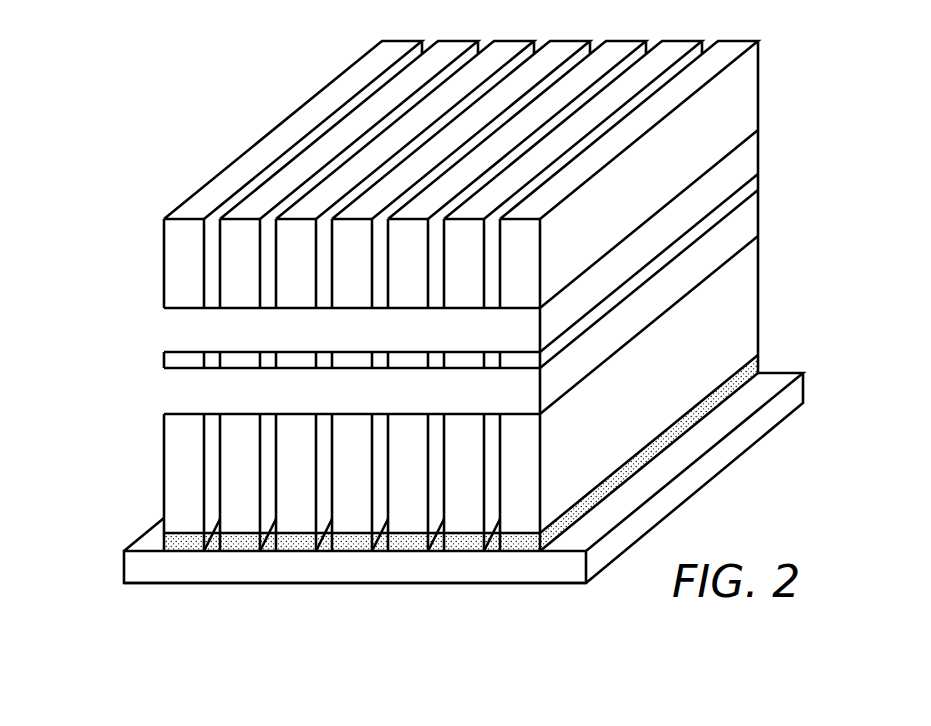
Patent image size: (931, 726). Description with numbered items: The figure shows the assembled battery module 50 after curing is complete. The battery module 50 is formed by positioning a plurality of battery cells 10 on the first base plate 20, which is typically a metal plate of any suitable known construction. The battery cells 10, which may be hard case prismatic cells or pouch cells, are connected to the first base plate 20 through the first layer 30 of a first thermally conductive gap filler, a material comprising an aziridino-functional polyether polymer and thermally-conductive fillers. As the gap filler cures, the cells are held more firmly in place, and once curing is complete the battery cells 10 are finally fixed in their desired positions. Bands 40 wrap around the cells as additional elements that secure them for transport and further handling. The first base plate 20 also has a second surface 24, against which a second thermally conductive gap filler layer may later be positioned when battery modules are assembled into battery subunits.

The battery module 50 is at (188, 68).
The battery cells 10 is at (213, 193).
The bands 40 is at (180, 332).
The first layer 30 is at (527, 542).
The first base plate 20 is at (123, 570).
The second surface 24 is at (190, 584).